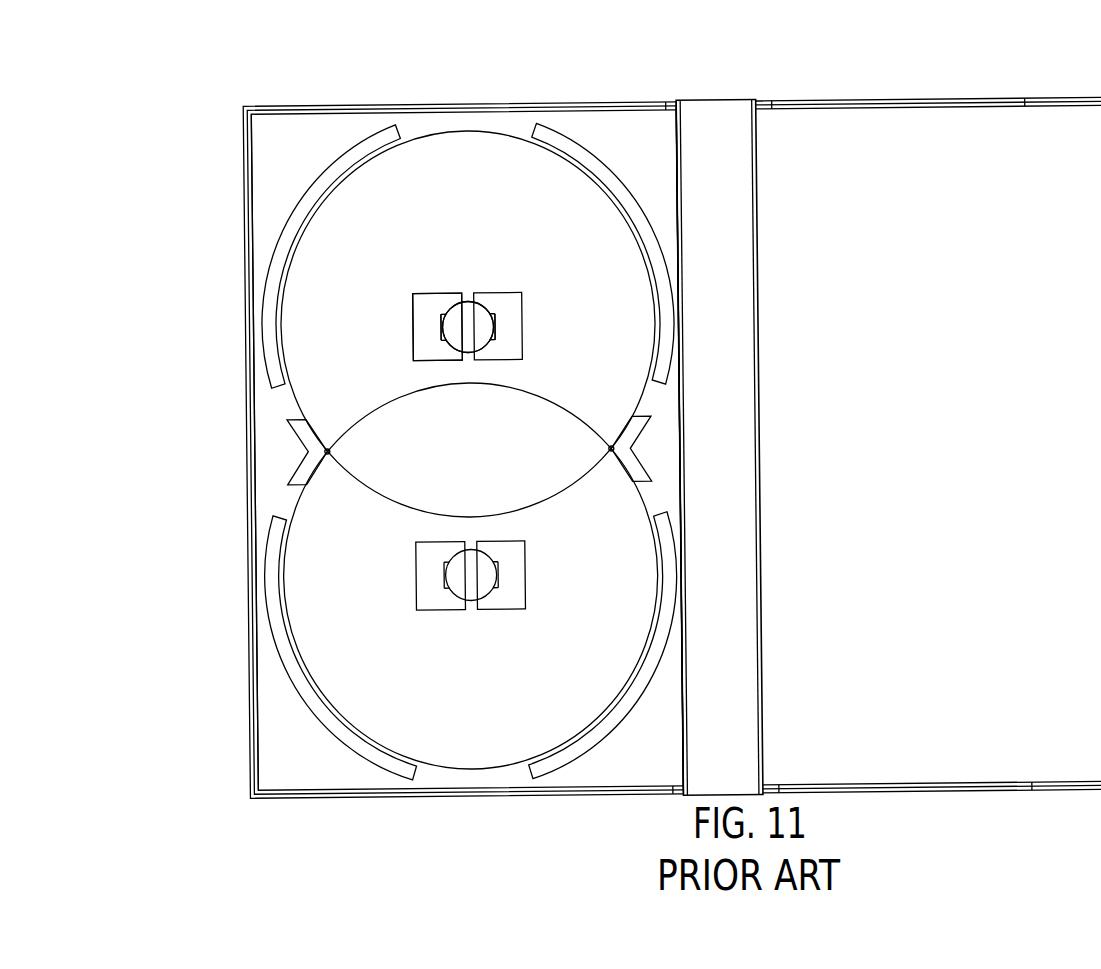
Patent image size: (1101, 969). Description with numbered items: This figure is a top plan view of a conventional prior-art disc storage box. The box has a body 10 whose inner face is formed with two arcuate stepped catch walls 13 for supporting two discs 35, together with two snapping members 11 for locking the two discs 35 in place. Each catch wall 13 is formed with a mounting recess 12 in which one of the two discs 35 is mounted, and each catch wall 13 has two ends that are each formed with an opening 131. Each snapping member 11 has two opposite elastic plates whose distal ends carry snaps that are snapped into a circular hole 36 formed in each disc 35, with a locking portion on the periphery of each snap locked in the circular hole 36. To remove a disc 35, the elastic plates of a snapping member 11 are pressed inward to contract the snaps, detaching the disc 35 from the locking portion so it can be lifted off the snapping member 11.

The body 10 is at (236, 125).
The snapping member 11 is at (361, 436).
The mounting recess 12 is at (325, 400).
The arcuate stepped catch wall 13 is at (357, 157).
The opening 131 is at (650, 402).
The disc 35 is at (460, 142).
The circular hole 36 is at (484, 556).